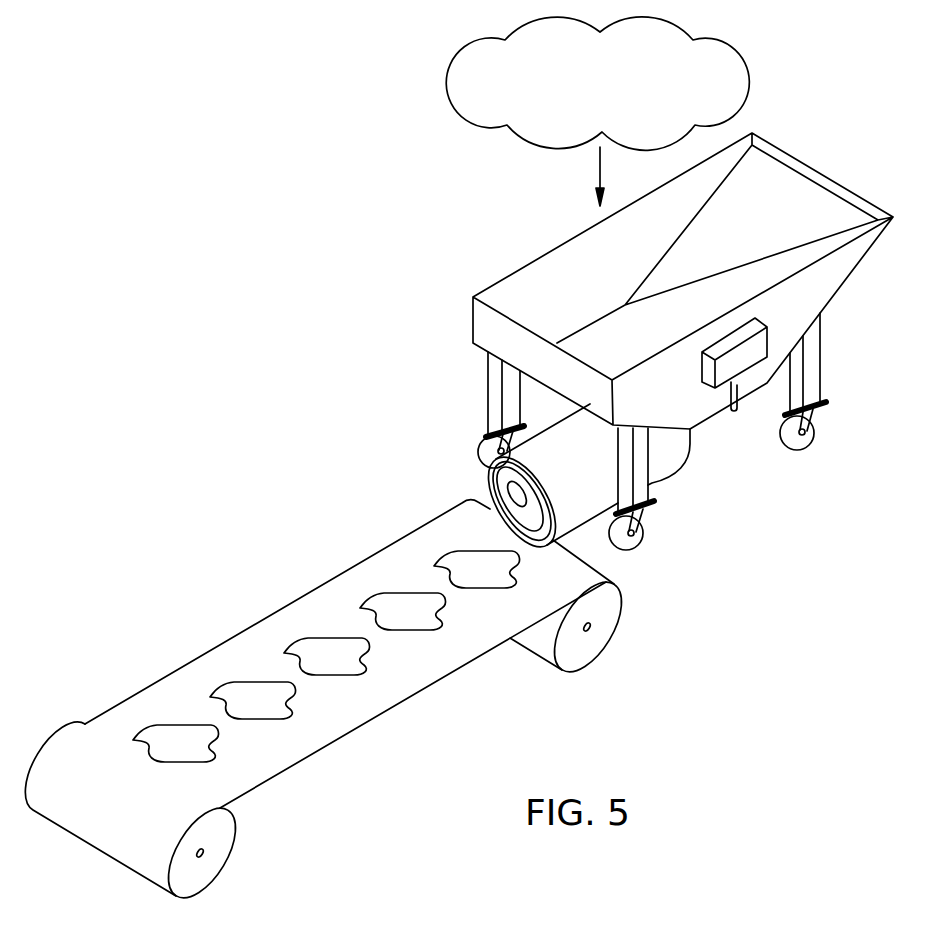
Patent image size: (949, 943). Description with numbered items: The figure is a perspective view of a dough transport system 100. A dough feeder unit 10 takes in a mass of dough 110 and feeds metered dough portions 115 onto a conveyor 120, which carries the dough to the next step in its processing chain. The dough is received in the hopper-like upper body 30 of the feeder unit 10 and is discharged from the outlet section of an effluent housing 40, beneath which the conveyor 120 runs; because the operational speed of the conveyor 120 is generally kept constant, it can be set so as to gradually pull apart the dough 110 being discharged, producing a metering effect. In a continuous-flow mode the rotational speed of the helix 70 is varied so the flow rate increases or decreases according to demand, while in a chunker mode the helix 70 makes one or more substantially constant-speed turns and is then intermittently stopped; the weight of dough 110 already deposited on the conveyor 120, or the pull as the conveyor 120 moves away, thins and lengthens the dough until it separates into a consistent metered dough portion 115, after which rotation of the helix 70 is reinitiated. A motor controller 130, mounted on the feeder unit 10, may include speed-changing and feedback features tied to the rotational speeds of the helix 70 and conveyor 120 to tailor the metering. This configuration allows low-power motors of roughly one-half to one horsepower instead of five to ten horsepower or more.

The dough transport system 100 is at (147, 291).
The dough feeder unit 10 is at (397, 292).
The dough 110 is at (457, 85).
The hopper 30 is at (852, 263).
The effluent housing 40 is at (662, 460).
The helix 70 is at (489, 470).
The motor controller 130 is at (735, 363).
The conveyor 120 is at (188, 672).
The metered dough portions 115 is at (402, 607).